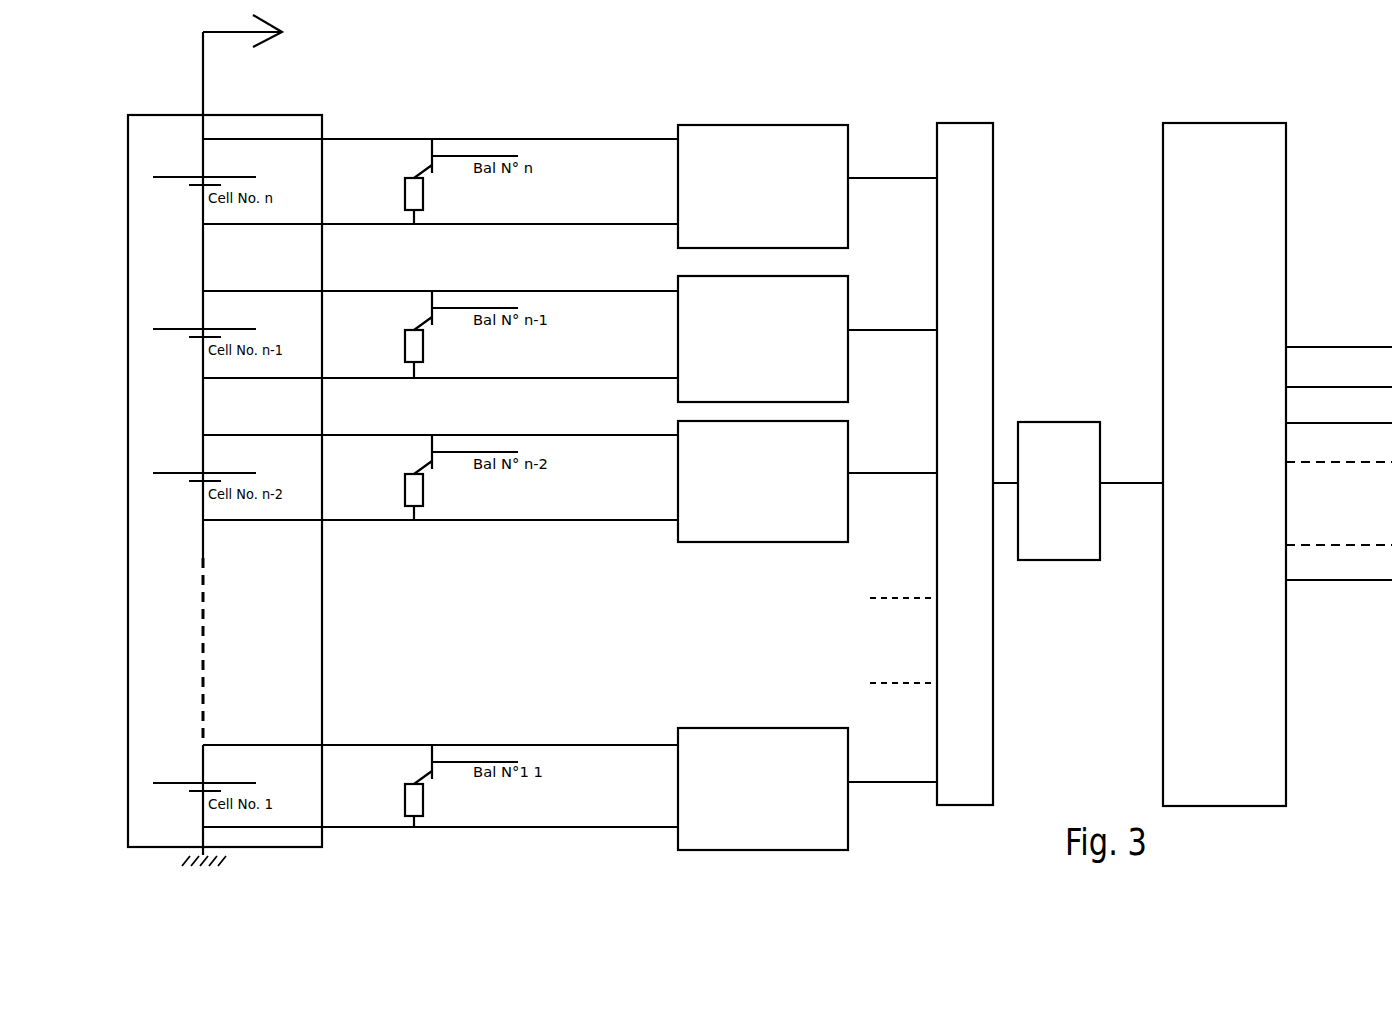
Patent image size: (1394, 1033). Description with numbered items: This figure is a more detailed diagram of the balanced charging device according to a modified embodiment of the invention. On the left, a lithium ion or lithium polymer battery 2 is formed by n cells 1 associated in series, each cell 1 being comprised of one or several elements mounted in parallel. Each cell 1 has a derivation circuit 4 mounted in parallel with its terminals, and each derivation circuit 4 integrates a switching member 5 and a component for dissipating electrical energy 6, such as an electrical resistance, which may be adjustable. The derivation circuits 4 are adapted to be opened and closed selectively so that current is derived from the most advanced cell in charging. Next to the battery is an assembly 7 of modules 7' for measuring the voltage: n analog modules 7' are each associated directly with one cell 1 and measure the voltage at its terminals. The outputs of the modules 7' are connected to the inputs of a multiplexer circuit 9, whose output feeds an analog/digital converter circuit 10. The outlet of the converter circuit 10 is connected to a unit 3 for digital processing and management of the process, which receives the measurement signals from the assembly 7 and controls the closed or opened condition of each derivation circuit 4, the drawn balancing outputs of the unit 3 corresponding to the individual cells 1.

The cell 1 is at (215, 172).
The battery 2 is at (233, 113).
The digital processing and management unit 3 is at (1228, 100).
The derivation circuit 4 is at (453, 127).
The switching member 5 is at (417, 152).
The component for dissipating electrical energy 6 is at (425, 198).
The assembly of measuring modules 7 is at (801, 450).
The module for measuring the voltage 7' is at (892, 451).
The multiplexer circuit 9 is at (1002, 227).
The analog/digital converter circuit 10 is at (1055, 413).